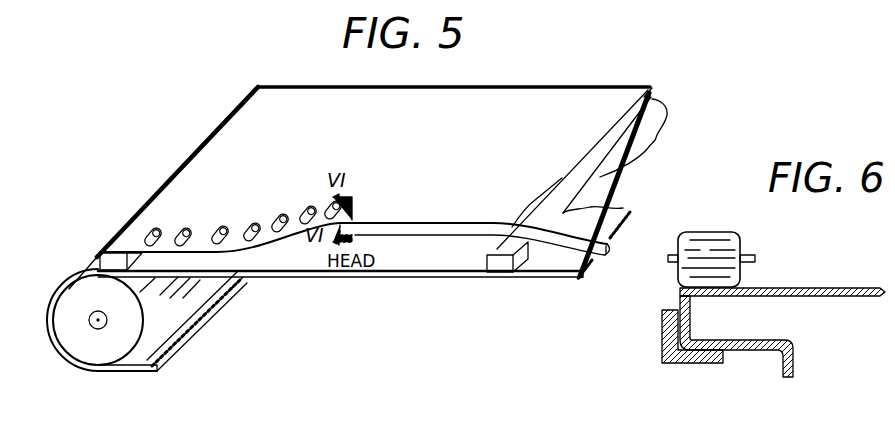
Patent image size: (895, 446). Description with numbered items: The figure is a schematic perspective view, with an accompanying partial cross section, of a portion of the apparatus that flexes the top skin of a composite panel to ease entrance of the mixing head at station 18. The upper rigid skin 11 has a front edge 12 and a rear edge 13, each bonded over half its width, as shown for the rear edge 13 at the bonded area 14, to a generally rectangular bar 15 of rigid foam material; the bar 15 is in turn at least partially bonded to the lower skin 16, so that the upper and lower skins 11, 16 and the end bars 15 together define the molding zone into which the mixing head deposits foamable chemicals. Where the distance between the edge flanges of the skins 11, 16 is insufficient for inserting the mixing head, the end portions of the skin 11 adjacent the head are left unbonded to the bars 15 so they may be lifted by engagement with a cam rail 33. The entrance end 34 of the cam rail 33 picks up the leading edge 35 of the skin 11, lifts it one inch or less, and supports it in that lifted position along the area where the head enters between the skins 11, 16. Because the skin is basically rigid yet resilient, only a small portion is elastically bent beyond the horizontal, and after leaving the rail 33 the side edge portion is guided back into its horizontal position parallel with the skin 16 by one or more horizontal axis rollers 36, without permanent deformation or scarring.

In FIG. 5, the upper rigid skin 11 is at (449, 150).
In FIG. 6, the upper rigid skin 11 is at (805, 290).
In FIG. 5, the front edge 12 is at (187, 157).
In FIG. 5, the rear edge 13 is at (556, 192).
In FIG. 5, the bonded area 14 is at (667, 138).
In FIG. 5, the rectangular bar of rigid foam material 15 is at (100, 258).
In FIG. 5, the lower skin 16 is at (456, 267).
In FIG. 5, the station 18 is at (313, 292).
In FIG. 5, the cam rail 33 is at (465, 200).
In FIG. 6, the cam rail 33 is at (700, 356).
In FIG. 5, the entrance end 34 is at (607, 250).
In FIG. 5, the leading edge 35 is at (123, 240).
In FIG. 5, the horizontal axis rollers 36 is at (286, 218).
In FIG. 6, the horizontal axis rollers 36 is at (730, 250).